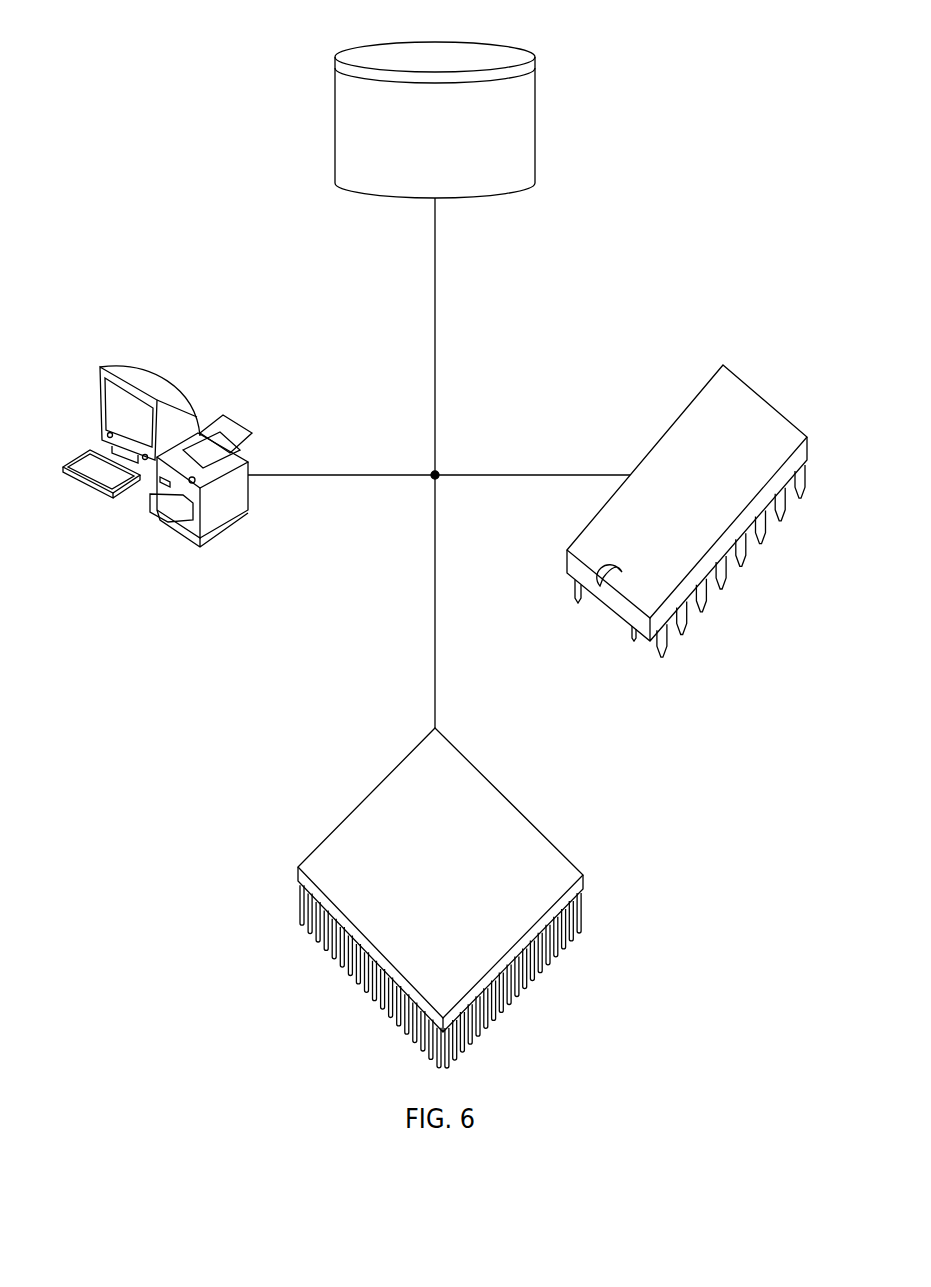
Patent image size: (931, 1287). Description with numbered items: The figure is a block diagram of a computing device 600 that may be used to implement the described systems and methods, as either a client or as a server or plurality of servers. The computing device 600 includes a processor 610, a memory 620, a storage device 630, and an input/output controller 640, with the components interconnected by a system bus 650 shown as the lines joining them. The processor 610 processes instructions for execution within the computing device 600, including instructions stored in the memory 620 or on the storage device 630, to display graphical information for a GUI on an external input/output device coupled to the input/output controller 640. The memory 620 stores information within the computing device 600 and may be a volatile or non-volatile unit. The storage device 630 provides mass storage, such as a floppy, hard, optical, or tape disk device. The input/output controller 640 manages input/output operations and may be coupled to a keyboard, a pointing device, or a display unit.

The computing device 600 is at (164, 867).
The processor 610 is at (366, 801).
The memory 620 is at (667, 430).
The storage device 630 is at (432, 42).
The input/output controller 640 is at (108, 368).
The system bus / interconnect 650 is at (337, 475).